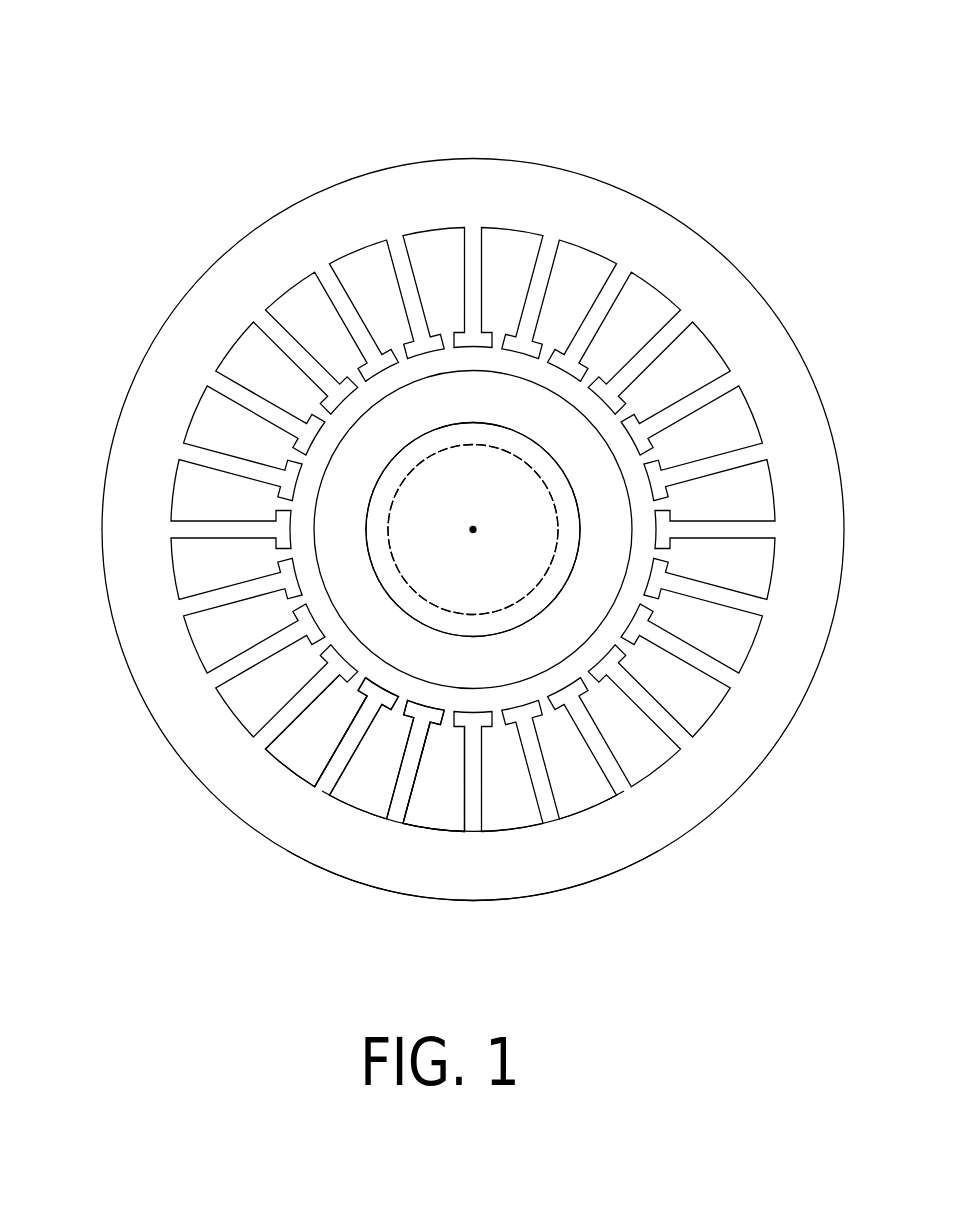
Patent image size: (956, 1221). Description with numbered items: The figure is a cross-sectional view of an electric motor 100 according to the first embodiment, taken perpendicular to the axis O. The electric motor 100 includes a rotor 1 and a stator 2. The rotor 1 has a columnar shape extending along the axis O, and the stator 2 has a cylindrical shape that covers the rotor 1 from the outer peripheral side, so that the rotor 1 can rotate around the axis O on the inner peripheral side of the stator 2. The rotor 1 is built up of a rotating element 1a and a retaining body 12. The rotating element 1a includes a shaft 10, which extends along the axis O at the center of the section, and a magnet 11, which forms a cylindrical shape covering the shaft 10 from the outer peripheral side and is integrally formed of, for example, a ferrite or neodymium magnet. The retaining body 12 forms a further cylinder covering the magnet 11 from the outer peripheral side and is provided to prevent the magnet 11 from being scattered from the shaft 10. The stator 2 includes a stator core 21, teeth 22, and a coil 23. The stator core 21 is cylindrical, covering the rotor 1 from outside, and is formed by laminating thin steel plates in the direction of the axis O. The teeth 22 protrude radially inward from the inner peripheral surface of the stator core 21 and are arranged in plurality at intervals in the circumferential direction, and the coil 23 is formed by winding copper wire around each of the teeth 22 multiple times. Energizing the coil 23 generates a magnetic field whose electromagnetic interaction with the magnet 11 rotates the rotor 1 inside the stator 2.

The electric motor 100 is at (138, 116).
The rotor 1 is at (310, 529).
The rotating element 1a is at (473, 530).
The shaft 10 is at (443, 482).
The magnet 11 is at (550, 470).
The retaining body 12 is at (507, 402).
The stator 2 is at (780, 759).
The stator core 21 is at (600, 840).
The teeth 22 is at (348, 748).
The coil 23 is at (303, 748).
The axis O is at (473, 530).